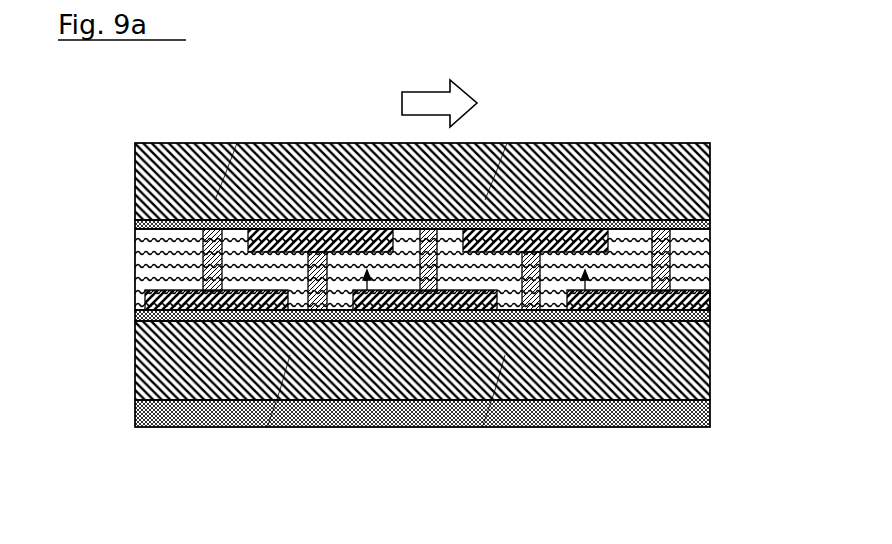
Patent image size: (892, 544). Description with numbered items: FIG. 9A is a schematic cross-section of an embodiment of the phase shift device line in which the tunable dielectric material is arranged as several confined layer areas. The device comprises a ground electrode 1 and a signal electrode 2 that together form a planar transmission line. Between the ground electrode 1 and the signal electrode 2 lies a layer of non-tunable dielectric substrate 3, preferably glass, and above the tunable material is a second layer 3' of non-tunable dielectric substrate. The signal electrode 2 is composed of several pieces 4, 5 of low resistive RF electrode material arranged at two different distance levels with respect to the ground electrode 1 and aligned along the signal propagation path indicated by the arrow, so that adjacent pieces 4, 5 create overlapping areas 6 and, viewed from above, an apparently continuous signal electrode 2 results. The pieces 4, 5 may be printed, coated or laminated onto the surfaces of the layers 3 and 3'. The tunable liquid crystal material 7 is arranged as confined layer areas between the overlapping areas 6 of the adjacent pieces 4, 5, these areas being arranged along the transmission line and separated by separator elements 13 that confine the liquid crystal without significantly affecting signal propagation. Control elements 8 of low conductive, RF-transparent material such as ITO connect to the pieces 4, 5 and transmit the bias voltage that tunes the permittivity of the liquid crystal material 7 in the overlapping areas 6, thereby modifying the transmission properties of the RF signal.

The ground electrode 1 is at (712, 404).
The signal electrode 2 is at (613, 247).
The non-tunable dielectric substrate 3 is at (468, 357).
The second layer of non-tunable dielectric substrate 3' is at (422, 155).
The piece of signal electrode 4 is at (213, 428).
The piece of signal electrode 5 is at (272, 143).
The overlapping area 6 is at (322, 428).
The tunable liquid crystal material 7 is at (135, 298).
The control element 8 is at (135, 248).
The separator element 13 is at (237, 143).